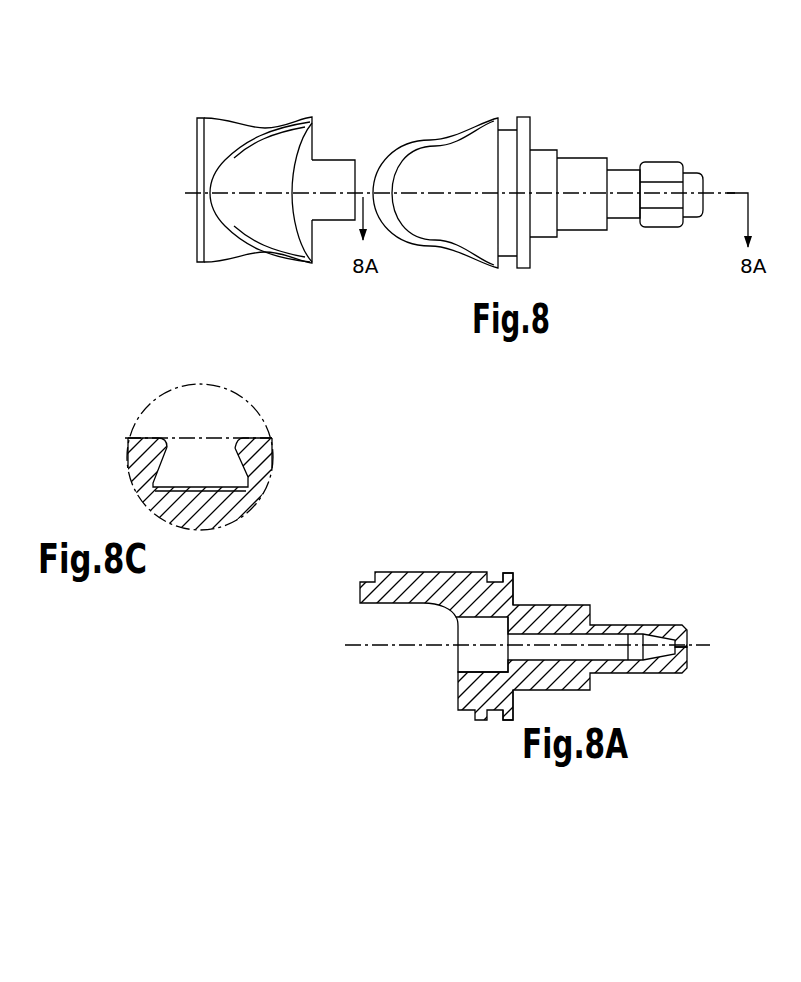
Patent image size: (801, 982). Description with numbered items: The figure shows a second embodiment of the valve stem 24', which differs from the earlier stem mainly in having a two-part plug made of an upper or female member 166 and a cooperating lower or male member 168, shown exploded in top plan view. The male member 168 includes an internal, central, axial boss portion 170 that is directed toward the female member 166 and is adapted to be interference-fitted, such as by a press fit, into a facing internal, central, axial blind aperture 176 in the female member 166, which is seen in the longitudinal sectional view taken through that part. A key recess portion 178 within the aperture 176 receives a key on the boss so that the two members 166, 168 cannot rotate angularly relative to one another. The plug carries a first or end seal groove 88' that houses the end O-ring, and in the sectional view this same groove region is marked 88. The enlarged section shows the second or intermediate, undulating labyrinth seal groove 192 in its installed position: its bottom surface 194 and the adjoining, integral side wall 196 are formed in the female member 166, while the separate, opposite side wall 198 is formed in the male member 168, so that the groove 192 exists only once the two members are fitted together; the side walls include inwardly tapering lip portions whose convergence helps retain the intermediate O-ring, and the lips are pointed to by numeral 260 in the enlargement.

In FIG. 8, the male member 168 is at (257, 115).
In FIG. 8, the boss portion 170 is at (340, 158).
In FIG. 8, the stem 24' is at (437, 64).
In FIG. 8, the female member 166 is at (492, 103).
In FIG. 8A, the female member 166 is at (470, 562).
In FIG. 8, the end seal groove 88' is at (557, 170).
In FIG. 8A, the flange 88 is at (530, 617).
In FIG. 8A, the blind aperture 176 is at (472, 653).
In FIG. 8A, the key recess portion 178 is at (458, 677).
In FIG. 8C, the groove edges 260 is at (237, 432).
In FIG. 8C, the second seal groove 192 is at (205, 465).
In FIG. 8C, the bottom surface 194 is at (203, 493).
In FIG. 8C, the side wall 196 is at (265, 470).
In FIG. 8C, the side wall 198 is at (145, 480).